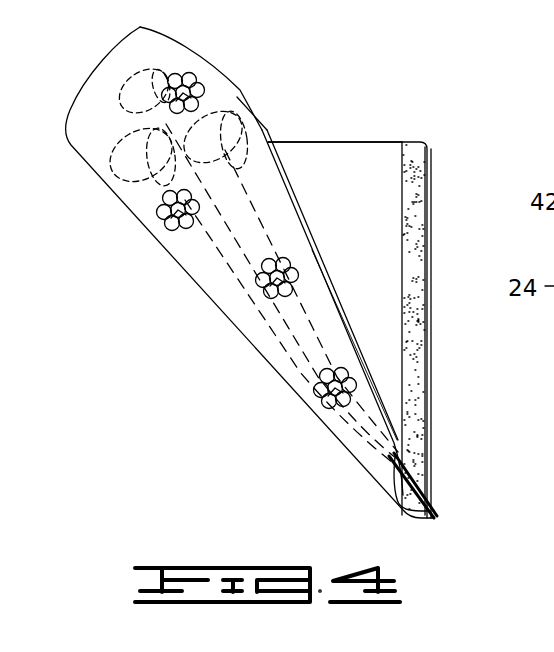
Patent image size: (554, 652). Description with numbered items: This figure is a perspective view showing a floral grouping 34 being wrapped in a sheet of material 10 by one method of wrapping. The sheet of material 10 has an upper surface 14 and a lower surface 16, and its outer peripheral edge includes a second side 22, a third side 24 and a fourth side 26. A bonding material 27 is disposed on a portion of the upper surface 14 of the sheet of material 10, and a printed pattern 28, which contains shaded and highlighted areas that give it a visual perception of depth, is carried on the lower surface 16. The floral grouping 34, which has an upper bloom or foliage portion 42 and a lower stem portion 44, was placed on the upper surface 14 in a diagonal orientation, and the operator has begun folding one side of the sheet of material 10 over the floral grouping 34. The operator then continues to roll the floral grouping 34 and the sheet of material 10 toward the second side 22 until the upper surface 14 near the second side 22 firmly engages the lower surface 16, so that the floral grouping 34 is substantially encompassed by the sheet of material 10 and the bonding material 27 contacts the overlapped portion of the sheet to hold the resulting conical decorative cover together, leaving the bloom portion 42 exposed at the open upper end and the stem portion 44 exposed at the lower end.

The sheet of material 10 is at (479, 103).
The upper surface 14 is at (362, 167).
The lower surface 16 is at (243, 309).
The second side 22 is at (295, 138).
The third side 24 is at (173, 37).
The fourth side 26 is at (428, 360).
The bonding material 27 is at (410, 177).
The printed pattern 28 is at (298, 384).
The floral grouping 34 is at (211, 279).
The upper bloom or foliage portion 42 is at (136, 74).
The lower stem portion 44 is at (438, 520).